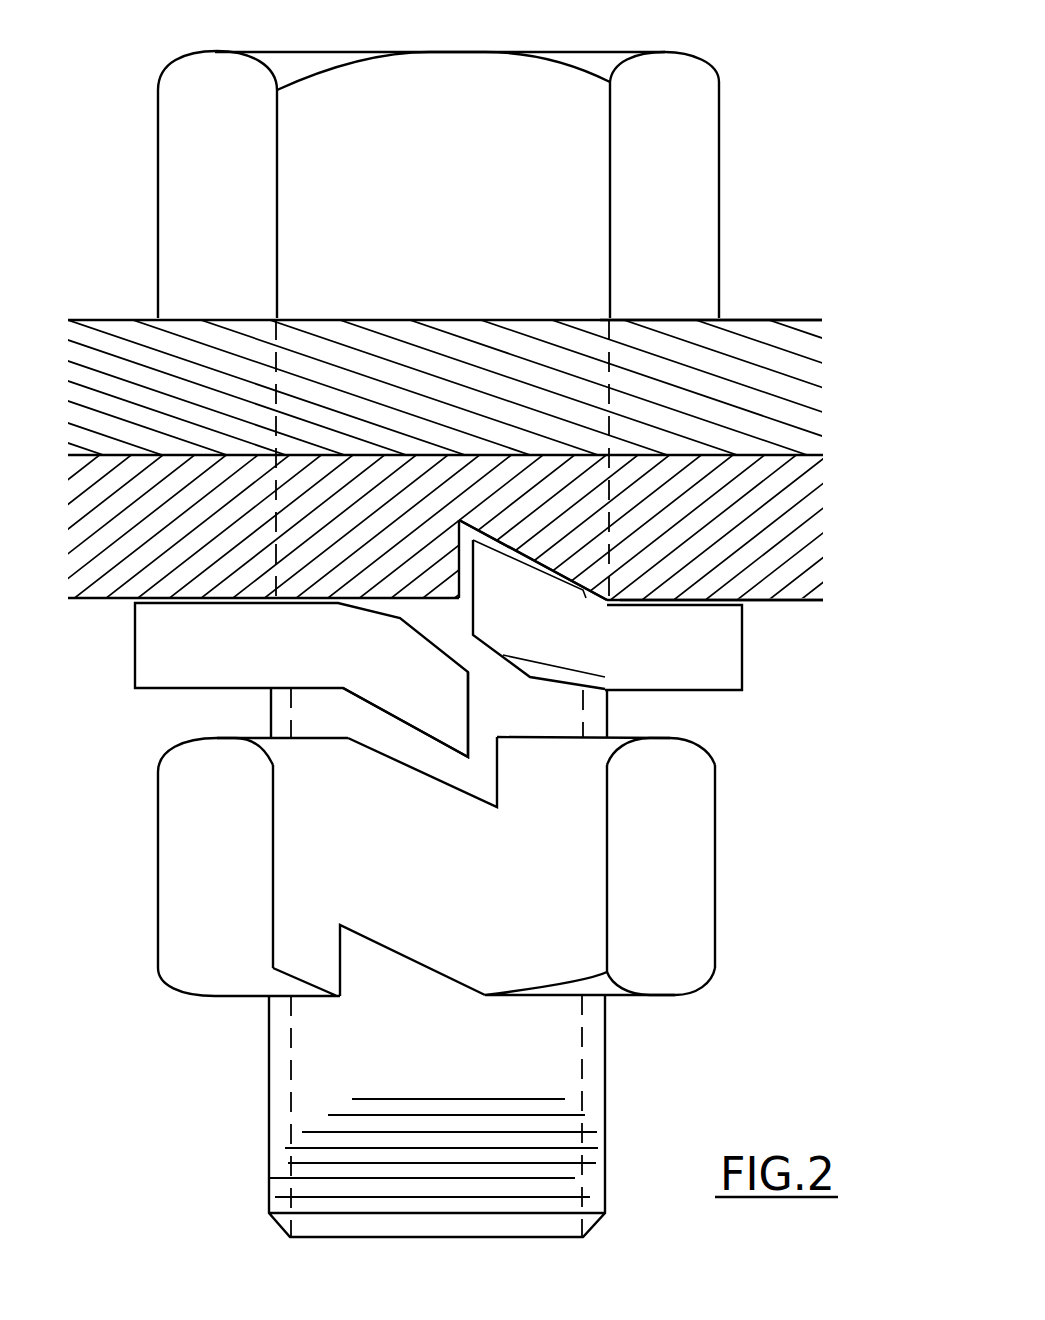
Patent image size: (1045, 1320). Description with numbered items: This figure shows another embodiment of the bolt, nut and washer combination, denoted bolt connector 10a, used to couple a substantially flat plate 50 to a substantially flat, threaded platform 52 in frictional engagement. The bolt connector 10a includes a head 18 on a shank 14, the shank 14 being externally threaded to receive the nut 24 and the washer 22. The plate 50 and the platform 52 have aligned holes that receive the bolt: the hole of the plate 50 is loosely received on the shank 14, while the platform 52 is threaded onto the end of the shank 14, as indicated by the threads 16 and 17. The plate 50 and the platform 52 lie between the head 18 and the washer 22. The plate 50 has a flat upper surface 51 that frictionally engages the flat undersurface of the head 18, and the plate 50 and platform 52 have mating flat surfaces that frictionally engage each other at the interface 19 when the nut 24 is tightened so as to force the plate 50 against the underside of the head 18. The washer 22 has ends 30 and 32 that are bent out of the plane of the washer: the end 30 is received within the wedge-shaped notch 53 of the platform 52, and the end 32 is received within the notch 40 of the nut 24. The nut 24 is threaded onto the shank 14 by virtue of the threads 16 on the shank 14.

The bolt connector 10a is at (760, 202).
The shank 14 is at (607, 702).
The threads 16 is at (572, 1163).
The threads 17 is at (276, 361).
The head 18 is at (703, 168).
The interface 19 is at (818, 455).
The washer 22 is at (742, 668).
The nut 24 is at (715, 820).
The end of washer 30 is at (655, 677).
The end of washer 32 is at (468, 705).
The notch 40 is at (420, 772).
The plate 50 is at (766, 330).
The flat upper surface 51 is at (722, 318).
The platform 52 is at (762, 600).
The wedge-shaped notch 53 is at (542, 570).